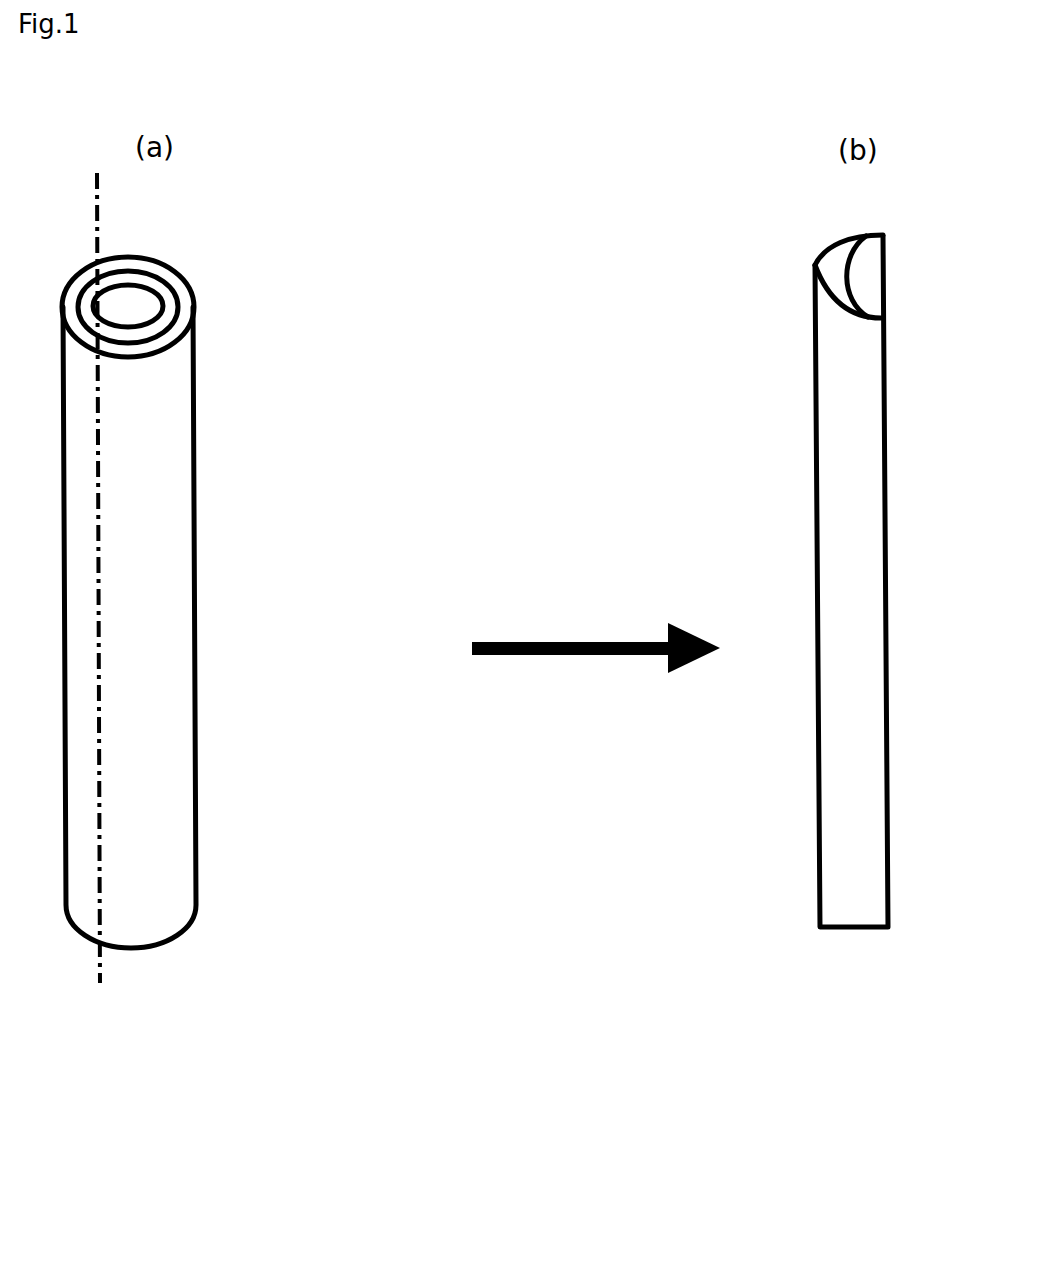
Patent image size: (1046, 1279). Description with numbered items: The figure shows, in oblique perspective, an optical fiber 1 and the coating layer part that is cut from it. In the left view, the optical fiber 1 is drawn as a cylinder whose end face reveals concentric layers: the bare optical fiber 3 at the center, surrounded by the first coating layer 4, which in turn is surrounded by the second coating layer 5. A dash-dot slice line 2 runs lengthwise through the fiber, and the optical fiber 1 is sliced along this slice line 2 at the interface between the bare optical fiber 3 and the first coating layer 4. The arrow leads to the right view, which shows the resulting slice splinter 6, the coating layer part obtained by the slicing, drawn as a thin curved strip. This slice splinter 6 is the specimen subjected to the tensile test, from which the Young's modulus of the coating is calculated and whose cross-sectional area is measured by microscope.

The optical fiber 1 is at (156, 948).
The slice line 2 is at (98, 615).
The bare optical fiber 3 is at (140, 297).
The first coating layer 4 is at (180, 322).
The second coating layer 5 is at (157, 342).
The slice splinter 6 is at (818, 875).